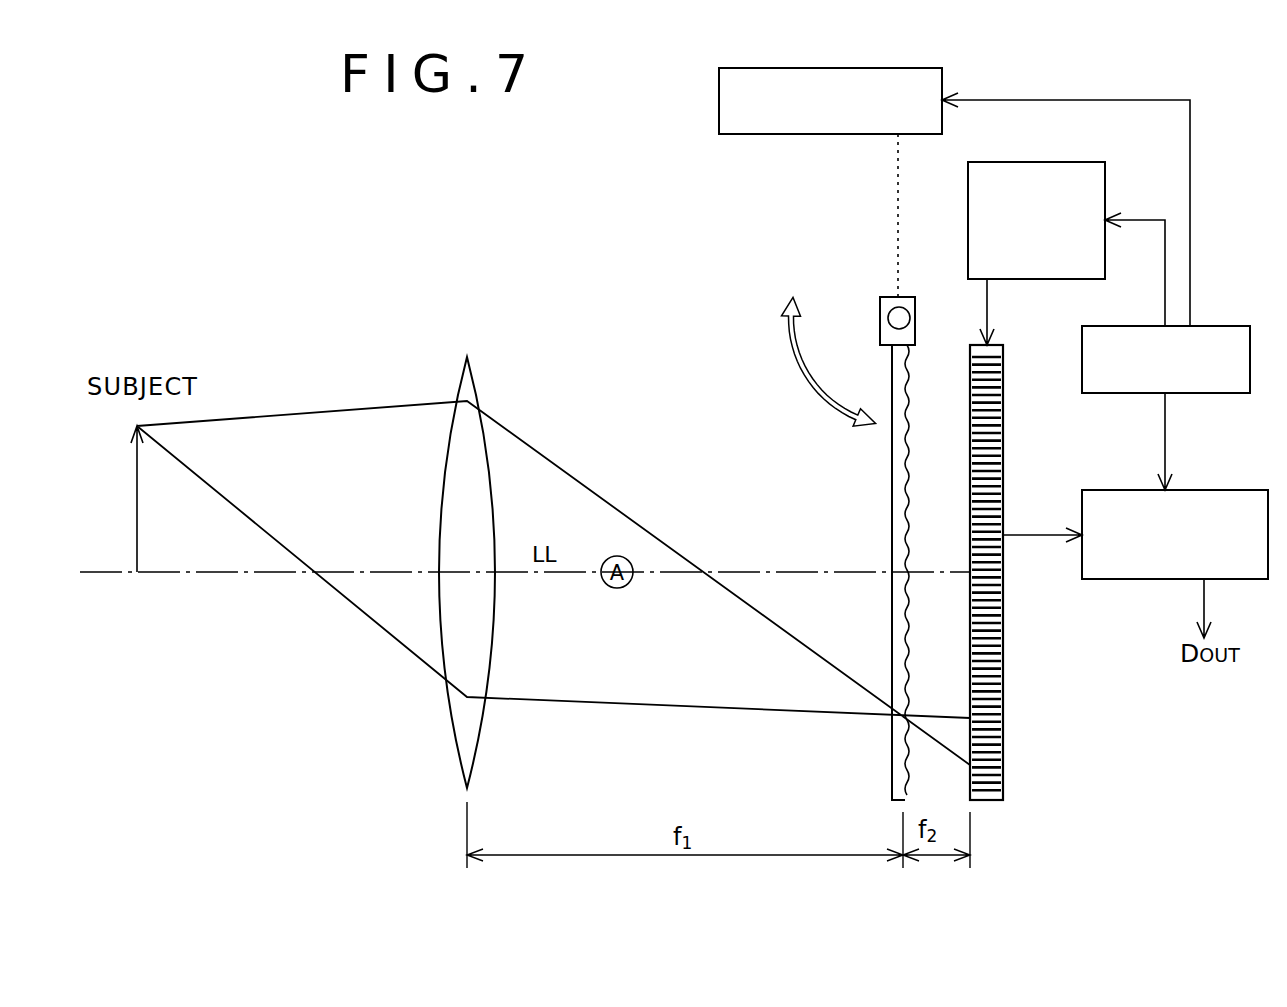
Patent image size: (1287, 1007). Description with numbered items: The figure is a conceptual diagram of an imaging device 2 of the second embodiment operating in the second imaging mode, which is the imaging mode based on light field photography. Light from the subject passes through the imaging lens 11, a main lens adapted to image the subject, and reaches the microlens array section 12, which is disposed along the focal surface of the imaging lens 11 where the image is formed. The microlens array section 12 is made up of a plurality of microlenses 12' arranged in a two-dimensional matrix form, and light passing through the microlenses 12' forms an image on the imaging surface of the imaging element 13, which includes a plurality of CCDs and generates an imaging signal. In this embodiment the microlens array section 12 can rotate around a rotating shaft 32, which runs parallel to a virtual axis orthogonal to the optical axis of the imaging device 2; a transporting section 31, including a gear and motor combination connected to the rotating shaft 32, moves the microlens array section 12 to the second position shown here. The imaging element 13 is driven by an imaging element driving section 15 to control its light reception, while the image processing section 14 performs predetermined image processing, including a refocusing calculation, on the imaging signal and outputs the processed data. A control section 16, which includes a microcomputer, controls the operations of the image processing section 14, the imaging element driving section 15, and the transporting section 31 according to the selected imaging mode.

The imaging device 2 is at (322, 298).
The imaging lens 11 is at (485, 735).
The microlens array section 12 is at (846, 548).
The microlenses 12' is at (931, 408).
The imaging element 13 is at (1003, 716).
The image processing section 14 is at (1210, 490).
The imaging element driving section 15 is at (1078, 162).
The control section 16 is at (1213, 326).
The transporting section 31 is at (903, 68).
The rotating shaft 32 is at (893, 297).